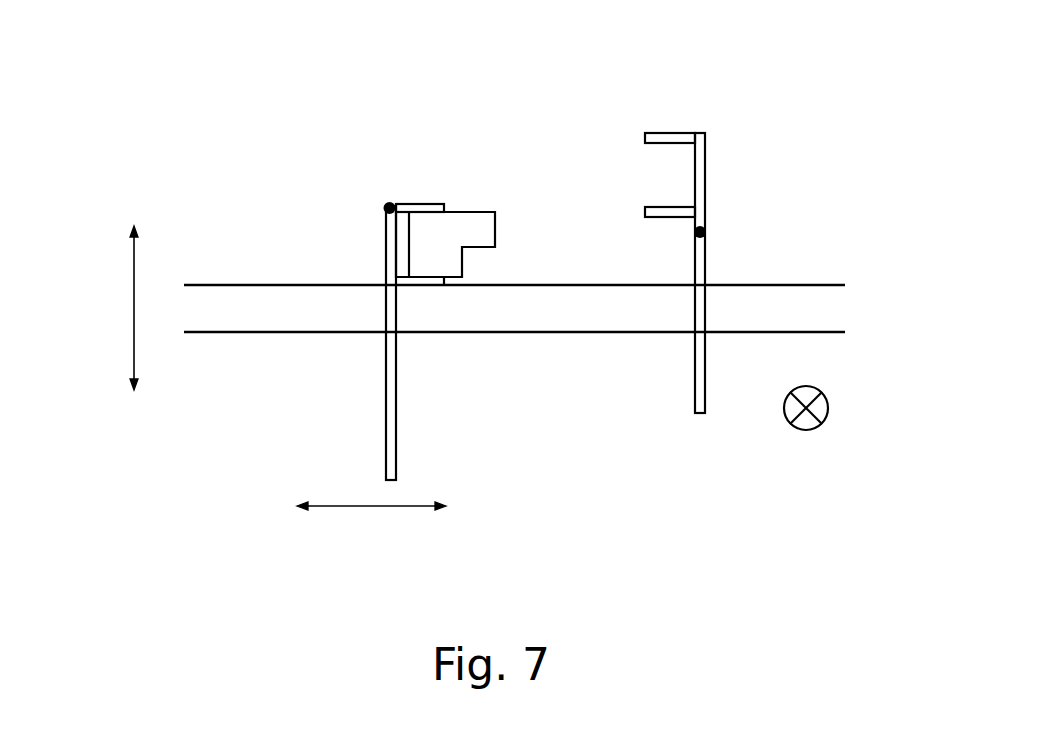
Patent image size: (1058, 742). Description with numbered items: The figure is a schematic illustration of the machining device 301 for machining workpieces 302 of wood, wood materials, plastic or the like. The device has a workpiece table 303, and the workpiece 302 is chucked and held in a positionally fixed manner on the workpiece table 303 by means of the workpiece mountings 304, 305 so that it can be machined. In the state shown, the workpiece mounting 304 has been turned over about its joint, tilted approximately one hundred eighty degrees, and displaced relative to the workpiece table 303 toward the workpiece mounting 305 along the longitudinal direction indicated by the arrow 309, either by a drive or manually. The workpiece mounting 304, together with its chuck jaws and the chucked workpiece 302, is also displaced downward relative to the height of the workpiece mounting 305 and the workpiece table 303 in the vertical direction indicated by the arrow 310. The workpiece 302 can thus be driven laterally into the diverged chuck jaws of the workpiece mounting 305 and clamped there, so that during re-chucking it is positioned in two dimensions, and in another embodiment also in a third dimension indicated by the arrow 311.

The machining device 301 is at (722, 145).
The workpiece 302 is at (475, 236).
The workpiece table 303 is at (533, 315).
The workpiece mounting 304 is at (388, 249).
The workpiece mounting 305 is at (699, 273).
The arrow 309 is at (372, 508).
The arrow 310 is at (134, 308).
The arrow 311 is at (823, 407).